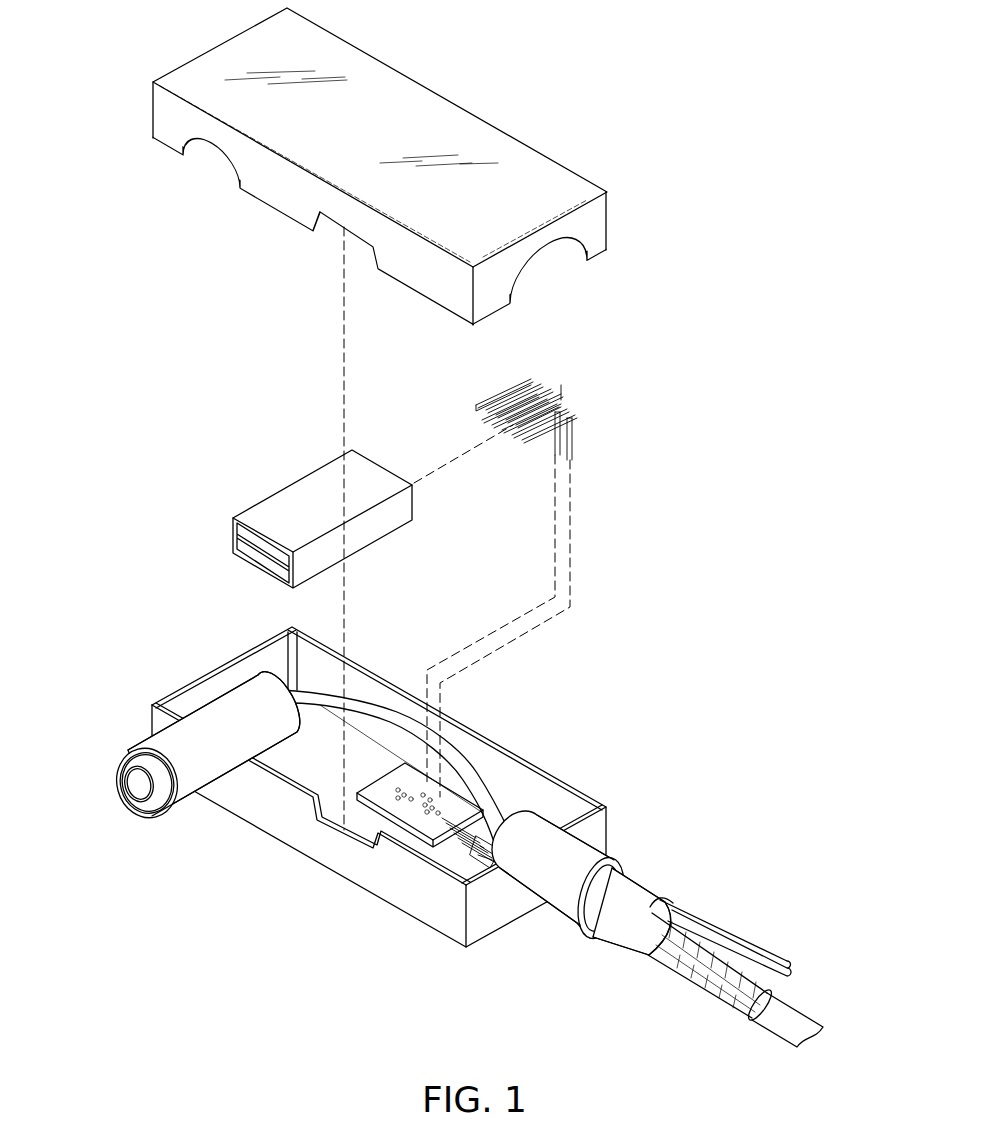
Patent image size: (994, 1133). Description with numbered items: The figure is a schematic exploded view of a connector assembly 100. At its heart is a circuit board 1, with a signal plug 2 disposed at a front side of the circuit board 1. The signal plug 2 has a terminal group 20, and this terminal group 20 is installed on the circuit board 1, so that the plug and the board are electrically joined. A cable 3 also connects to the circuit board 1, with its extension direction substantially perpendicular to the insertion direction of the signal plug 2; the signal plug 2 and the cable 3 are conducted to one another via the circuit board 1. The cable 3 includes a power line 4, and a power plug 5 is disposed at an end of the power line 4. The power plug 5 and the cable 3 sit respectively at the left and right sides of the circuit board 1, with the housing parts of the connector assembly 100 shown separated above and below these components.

The connector assembly 100 is at (792, 43).
The circuit board 1 is at (393, 810).
The signal plug 2 is at (282, 495).
The cable 3 is at (617, 938).
The power line 4 is at (467, 768).
The power plug 5 is at (148, 738).
The terminal group 20 is at (560, 393).